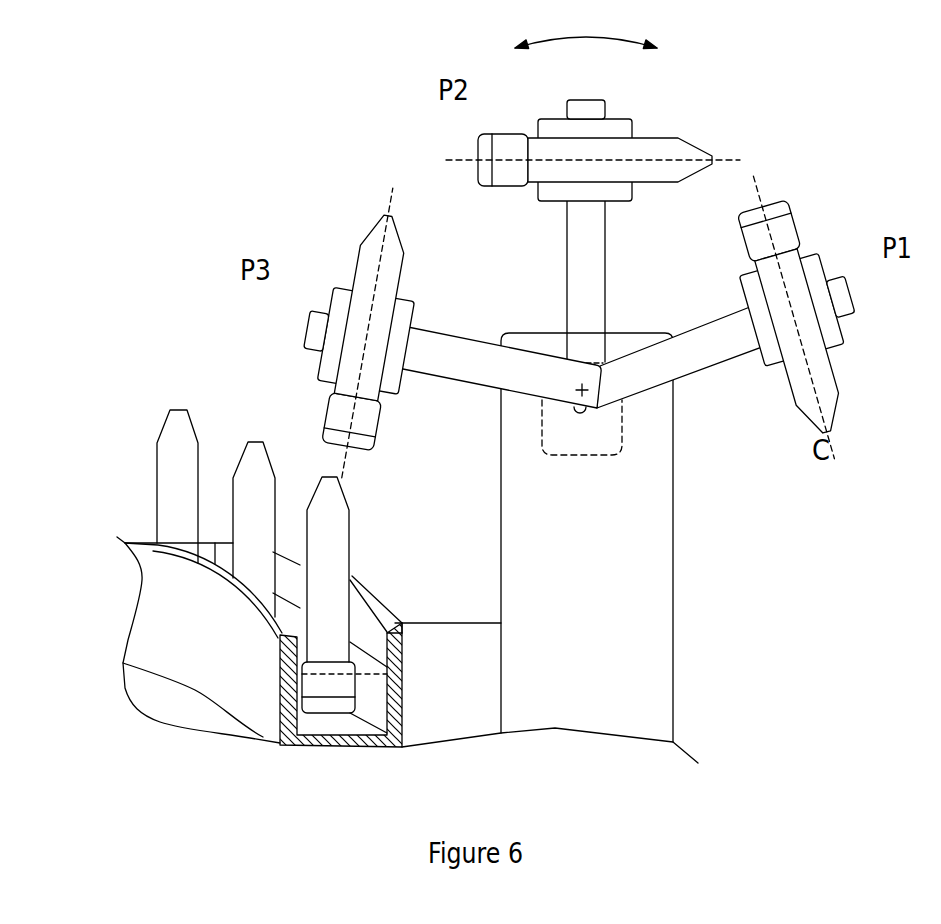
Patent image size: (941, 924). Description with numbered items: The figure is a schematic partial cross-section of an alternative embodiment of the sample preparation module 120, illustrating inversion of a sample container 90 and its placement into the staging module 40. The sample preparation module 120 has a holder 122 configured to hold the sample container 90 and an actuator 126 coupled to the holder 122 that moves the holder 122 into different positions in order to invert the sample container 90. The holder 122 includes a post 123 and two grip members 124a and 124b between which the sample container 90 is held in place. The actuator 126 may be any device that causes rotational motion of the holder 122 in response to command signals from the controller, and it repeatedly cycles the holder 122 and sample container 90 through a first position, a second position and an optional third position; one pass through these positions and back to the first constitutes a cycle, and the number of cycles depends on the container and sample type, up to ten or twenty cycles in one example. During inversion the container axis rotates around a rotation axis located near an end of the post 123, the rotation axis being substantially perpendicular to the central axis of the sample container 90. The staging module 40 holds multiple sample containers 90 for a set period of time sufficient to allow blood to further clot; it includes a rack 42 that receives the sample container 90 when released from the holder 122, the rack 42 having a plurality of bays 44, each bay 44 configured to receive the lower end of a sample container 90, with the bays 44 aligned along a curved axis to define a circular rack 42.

The staging module 40 is at (241, 682).
The rack 42 is at (253, 700).
The bay 44 is at (335, 701).
The sample container 90 is at (625, 153).
The sample preparation module 120 is at (617, 384).
The holder 122 is at (712, 457).
The post 123 is at (722, 337).
The grip member 124a is at (845, 340).
The grip member 124b is at (768, 347).
The actuator 126 is at (545, 425).